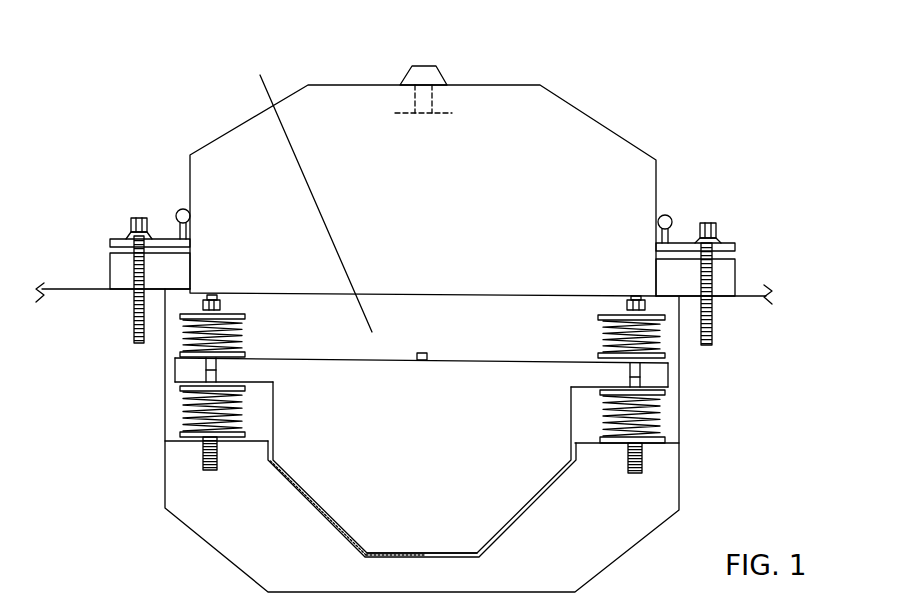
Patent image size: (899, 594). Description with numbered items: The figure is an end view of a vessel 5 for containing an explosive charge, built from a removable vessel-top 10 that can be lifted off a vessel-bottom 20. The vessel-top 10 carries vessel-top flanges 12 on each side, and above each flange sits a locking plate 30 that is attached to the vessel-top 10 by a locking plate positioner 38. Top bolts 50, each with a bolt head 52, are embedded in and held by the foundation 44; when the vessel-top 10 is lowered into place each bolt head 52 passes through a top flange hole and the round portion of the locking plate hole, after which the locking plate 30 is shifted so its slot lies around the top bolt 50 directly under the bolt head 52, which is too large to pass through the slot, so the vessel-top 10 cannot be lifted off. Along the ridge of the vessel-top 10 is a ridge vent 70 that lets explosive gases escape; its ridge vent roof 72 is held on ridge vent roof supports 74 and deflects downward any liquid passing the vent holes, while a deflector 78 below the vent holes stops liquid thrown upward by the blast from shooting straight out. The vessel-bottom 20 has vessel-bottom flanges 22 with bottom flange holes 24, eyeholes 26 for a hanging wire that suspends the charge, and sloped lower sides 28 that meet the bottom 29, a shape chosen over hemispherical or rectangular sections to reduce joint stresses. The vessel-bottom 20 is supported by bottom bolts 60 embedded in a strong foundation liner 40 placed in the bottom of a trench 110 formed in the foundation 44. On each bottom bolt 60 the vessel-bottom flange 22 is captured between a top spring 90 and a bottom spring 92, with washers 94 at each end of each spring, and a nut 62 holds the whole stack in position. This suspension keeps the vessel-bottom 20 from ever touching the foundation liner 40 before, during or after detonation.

The vessel 5 is at (808, 287).
The vessel-top 10 is at (600, 96).
The vessel-top flange 12 is at (110, 268).
The vessel-bottom 20 is at (433, 440).
The vessel-bottom flange 22 is at (568, 359).
The bottom flange hole 24 is at (175, 376).
The eyehole 26 is at (422, 353).
The lower side 28 is at (333, 492).
The bottom 29 is at (423, 541).
The locking plate 30 is at (110, 243).
The locking plate positioner 38 is at (177, 211).
The foundation liner 40 is at (640, 524).
The foundation 44 is at (135, 445).
The top bolt 50 is at (134, 326).
The bolt head 52 is at (133, 222).
The bottom bolt 60 is at (215, 300).
The nut 62 is at (203, 300).
The ridge vent 70 is at (459, 90).
The ridge vent roof 72 is at (445, 74).
The ridge vent roof support 74 is at (434, 98).
The deflector 78 is at (408, 113).
The top spring 90 is at (241, 334).
The bottom spring 92 is at (243, 414).
The washer 94 is at (246, 315).
The trench 110 is at (304, 187).